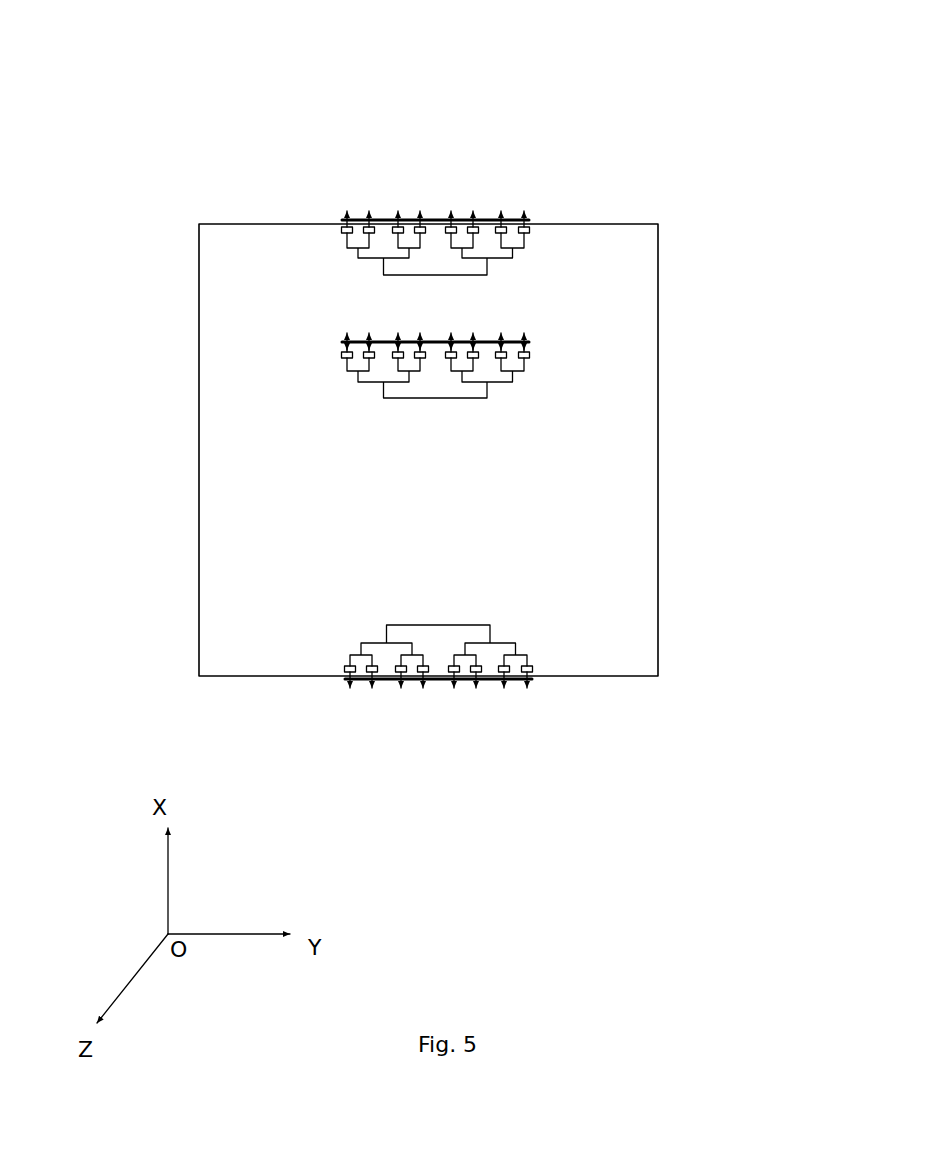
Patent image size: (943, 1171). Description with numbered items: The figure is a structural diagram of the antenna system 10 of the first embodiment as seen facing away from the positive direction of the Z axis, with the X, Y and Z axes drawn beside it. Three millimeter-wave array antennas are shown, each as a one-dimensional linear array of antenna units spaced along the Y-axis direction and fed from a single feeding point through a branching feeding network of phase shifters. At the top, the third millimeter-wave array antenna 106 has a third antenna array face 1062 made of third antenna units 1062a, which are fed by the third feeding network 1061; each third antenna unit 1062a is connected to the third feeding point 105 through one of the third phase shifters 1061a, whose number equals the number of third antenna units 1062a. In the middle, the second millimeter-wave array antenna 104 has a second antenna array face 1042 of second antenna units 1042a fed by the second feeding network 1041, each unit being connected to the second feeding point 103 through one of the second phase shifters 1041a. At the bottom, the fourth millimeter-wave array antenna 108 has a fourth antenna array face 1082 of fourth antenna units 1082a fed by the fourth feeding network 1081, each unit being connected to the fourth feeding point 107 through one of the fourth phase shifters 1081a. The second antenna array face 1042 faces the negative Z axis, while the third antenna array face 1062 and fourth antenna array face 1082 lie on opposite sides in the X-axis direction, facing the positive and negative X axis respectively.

The antenna module 10 is at (455, 51).
The third millimeter-wave array antenna 106 is at (613, 86).
The third antenna array face 1062 is at (525, 216).
The third antenna units 1062a is at (398, 214).
The third feeding network 1061 is at (533, 233).
The third phase shifters 1061a is at (340, 231).
The third feeding point 105 is at (433, 280).
The second millimeter-wave array antenna 104 is at (735, 280).
The second antenna array face 1042 is at (528, 341).
The second antenna units 1042a is at (342, 341).
The second feeding network 1041 is at (532, 360).
The second phase shifters 1041a is at (340, 357).
The second feeding point 103 is at (432, 402).
The fourth millimeter-wave array antenna 108 is at (365, 812).
The fourth antenna array face 1082 is at (347, 688).
The fourth antenna units 1082a is at (475, 686).
The fourth feeding network 1081 is at (338, 664).
The fourth phase shifters 1081a is at (534, 668).
The fourth feeding point 107 is at (442, 620).